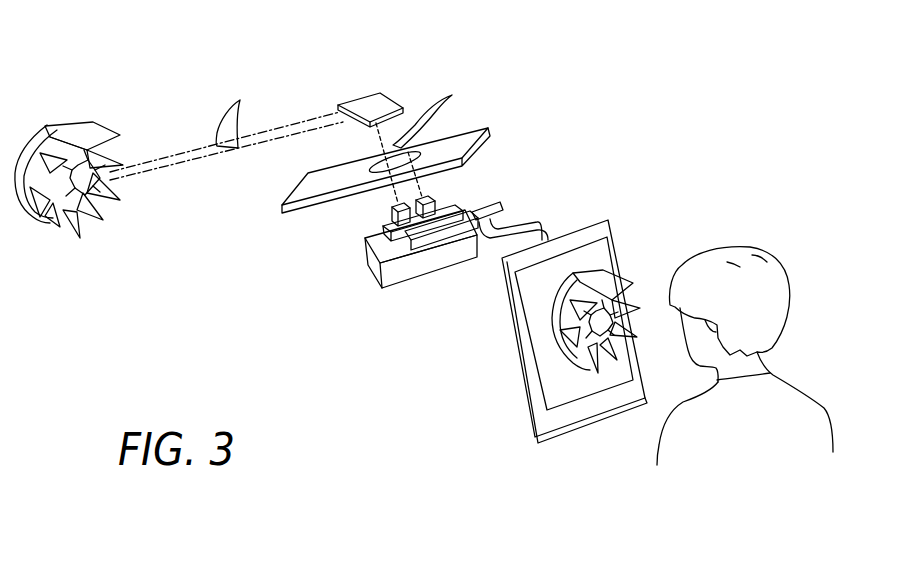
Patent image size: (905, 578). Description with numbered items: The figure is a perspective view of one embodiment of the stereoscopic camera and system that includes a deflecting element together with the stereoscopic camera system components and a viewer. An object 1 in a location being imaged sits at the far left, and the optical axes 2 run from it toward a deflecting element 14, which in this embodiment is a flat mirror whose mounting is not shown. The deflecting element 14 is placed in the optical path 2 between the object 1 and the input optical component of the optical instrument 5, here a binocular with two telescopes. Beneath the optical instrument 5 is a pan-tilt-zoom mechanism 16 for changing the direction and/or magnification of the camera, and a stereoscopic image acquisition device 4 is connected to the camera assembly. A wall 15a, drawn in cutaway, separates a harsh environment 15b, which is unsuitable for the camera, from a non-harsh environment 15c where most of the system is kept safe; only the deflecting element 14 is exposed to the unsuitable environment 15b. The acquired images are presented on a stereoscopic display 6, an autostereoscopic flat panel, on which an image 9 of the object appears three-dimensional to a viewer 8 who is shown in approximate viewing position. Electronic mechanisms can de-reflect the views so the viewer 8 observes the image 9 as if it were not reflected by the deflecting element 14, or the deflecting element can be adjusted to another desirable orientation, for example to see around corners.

The object 1 is at (93, 123).
The optical axes 2 is at (457, 95).
The stereoscopic image acquisition device 4 is at (500, 203).
The optical instrument 5 is at (376, 216).
The stereoscopic display 6 is at (608, 220).
The viewer 8 is at (741, 437).
The image of object 9 is at (553, 327).
The deflecting element 14 is at (380, 93).
The wall 15a is at (303, 190).
The harsh environment 15b is at (315, 31).
The non-harsh environment 15c is at (357, 294).
The pan-tilt-zoom mechanism 16 is at (408, 283).